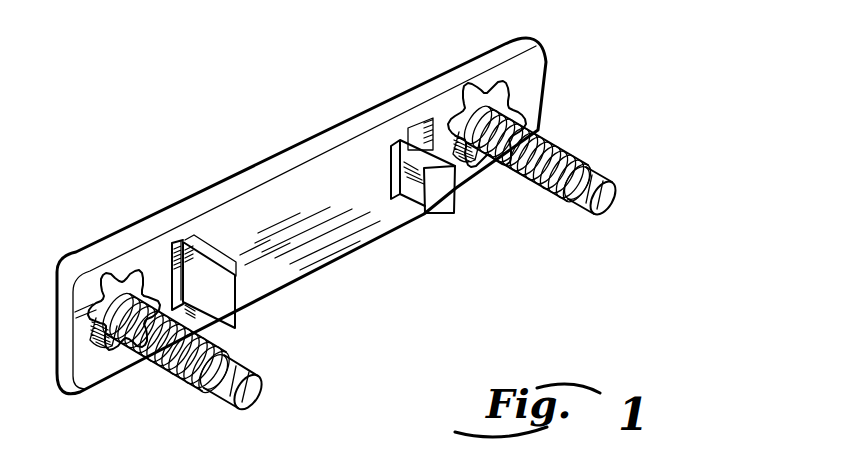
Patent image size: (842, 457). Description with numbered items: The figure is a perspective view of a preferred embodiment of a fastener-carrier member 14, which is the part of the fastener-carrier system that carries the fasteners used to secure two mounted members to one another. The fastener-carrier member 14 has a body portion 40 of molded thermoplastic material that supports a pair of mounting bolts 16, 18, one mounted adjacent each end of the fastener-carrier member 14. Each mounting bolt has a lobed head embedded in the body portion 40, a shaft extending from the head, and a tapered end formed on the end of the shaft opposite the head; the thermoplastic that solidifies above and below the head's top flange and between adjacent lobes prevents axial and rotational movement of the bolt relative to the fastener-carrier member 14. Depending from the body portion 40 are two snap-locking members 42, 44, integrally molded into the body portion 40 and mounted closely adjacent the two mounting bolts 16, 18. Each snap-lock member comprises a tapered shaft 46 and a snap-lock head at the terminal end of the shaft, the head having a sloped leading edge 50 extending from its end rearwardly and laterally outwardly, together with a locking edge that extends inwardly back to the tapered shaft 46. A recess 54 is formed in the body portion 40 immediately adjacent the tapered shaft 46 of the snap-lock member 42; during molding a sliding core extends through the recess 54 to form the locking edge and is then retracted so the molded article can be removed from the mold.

The fastener-carrier member 14 is at (135, 102).
The mounting bolt 16 is at (178, 398).
The mounting bolt 18 is at (531, 205).
The body portion 40 is at (282, 147).
The snap-locking member 42 is at (238, 295).
The snap-locking member 44 is at (472, 193).
The tapered shaft 46 is at (204, 276).
The sloped leading edge 50 is at (435, 208).
The recess 54 is at (390, 175).